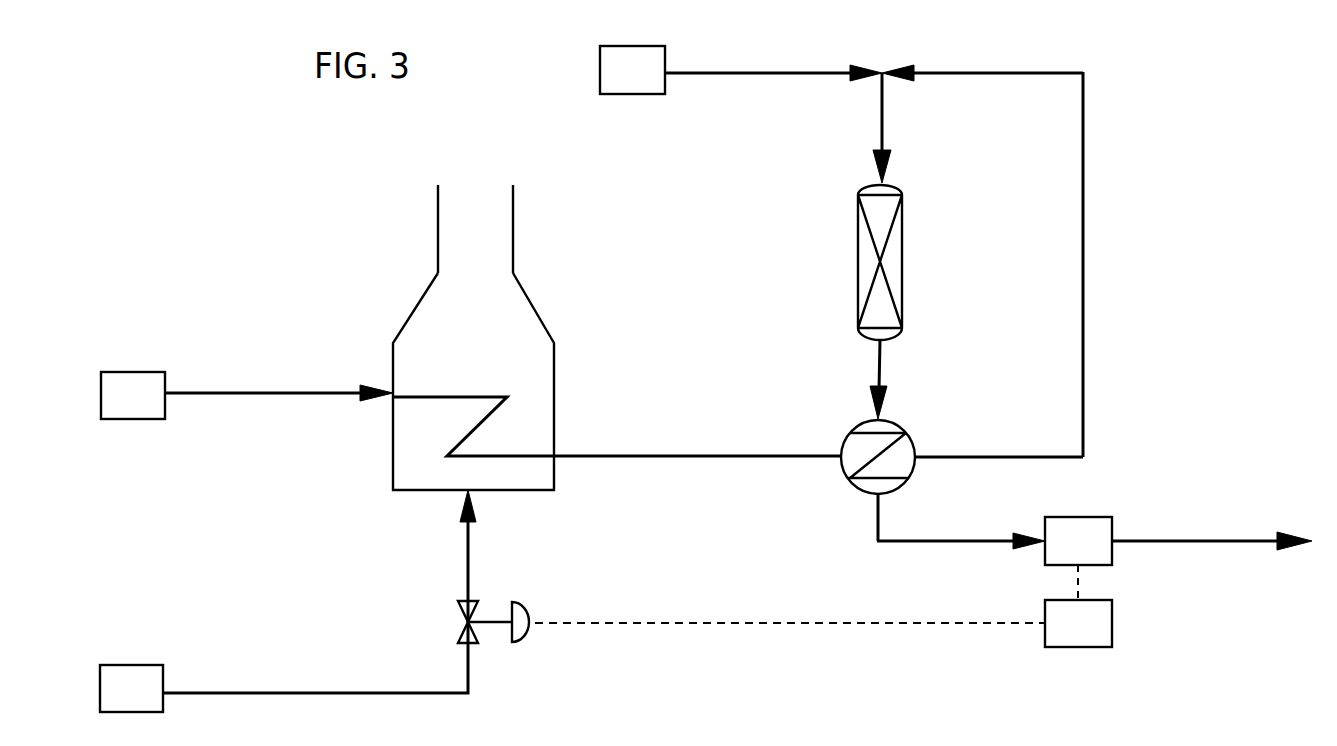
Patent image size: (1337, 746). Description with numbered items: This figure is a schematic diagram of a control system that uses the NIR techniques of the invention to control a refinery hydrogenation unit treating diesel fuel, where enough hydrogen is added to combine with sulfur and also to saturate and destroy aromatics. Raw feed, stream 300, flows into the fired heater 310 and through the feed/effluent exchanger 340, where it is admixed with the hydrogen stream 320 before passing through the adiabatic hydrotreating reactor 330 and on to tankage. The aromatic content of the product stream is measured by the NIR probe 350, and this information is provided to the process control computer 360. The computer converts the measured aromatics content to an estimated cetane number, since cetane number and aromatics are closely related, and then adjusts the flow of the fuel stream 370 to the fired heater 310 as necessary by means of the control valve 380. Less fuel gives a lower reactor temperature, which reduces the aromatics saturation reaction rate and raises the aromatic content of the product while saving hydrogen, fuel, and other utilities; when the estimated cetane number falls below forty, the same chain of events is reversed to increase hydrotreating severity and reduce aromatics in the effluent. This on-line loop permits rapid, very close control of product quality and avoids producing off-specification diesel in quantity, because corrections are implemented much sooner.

The raw feed stream 300 is at (247, 395).
The fired heater 310 is at (473, 413).
The hydrogen stream 320 is at (841, 251).
The adiabatic hydrotreating reactor 330 is at (903, 283).
The feed/effluent exchanger 340 is at (799, 470).
The NIR probe 350 is at (1178, 541).
The process control computer 360 is at (823, 606).
The fuel stream 370 is at (284, 677).
The control valve 380 is at (471, 604).